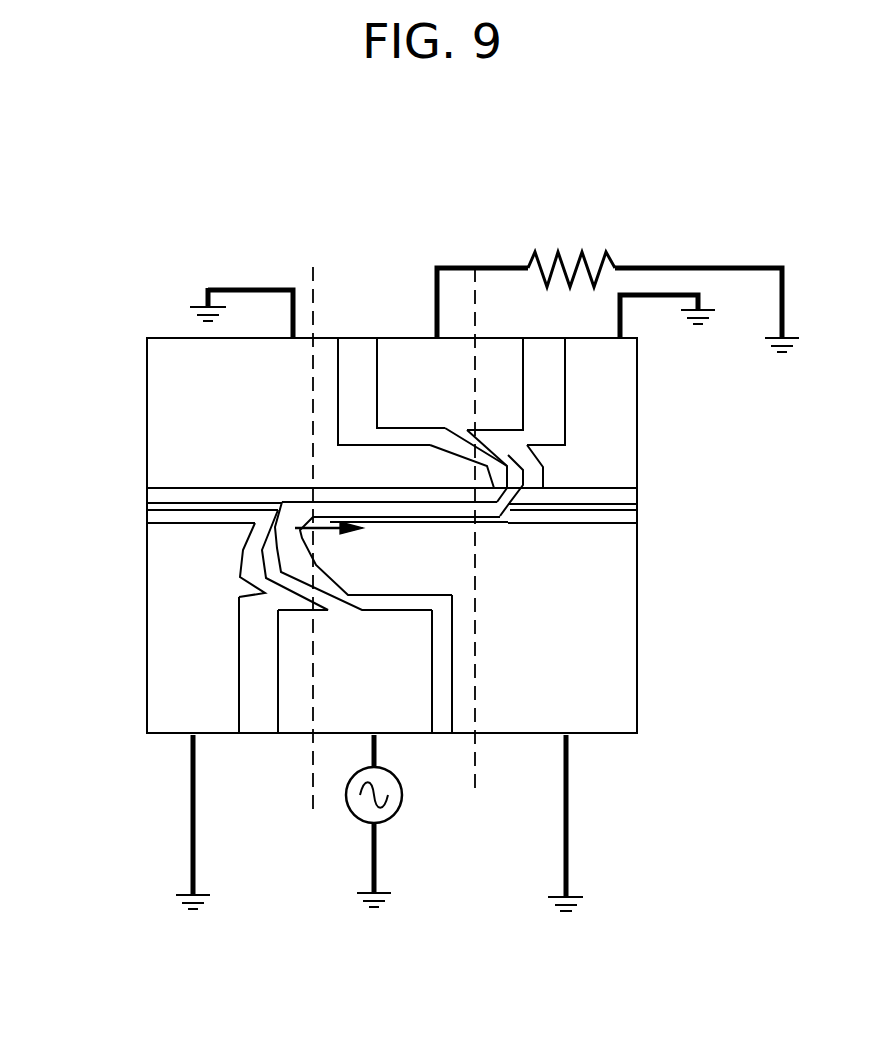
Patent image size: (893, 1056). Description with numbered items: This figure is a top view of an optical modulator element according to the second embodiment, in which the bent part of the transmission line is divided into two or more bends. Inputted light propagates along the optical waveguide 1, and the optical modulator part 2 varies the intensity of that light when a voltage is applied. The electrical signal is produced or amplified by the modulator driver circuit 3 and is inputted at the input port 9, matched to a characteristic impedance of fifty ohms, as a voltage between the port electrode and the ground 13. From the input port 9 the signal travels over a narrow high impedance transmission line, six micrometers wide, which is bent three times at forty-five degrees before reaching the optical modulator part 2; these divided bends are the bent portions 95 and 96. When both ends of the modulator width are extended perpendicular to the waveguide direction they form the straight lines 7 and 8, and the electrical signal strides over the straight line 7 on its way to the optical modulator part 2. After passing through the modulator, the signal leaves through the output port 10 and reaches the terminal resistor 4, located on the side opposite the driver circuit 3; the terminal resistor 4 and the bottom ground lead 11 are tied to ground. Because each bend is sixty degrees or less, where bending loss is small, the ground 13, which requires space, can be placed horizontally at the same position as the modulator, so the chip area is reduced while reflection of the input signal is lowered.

The optical waveguide 1 is at (200, 503).
The optical modulator part 2 is at (377, 511).
The modulator driver circuit 3 is at (395, 812).
The terminal resistor 4 is at (570, 255).
The straight line 7 is at (313, 525).
The straight line 8 is at (473, 513).
The input port 9 is at (310, 712).
The output port 10 is at (455, 380).
The ground connection 11 is at (570, 855).
The ground 13 is at (160, 403).
The electrode bend portion 95 is at (270, 562).
The electrode bend portion 96 is at (520, 490).